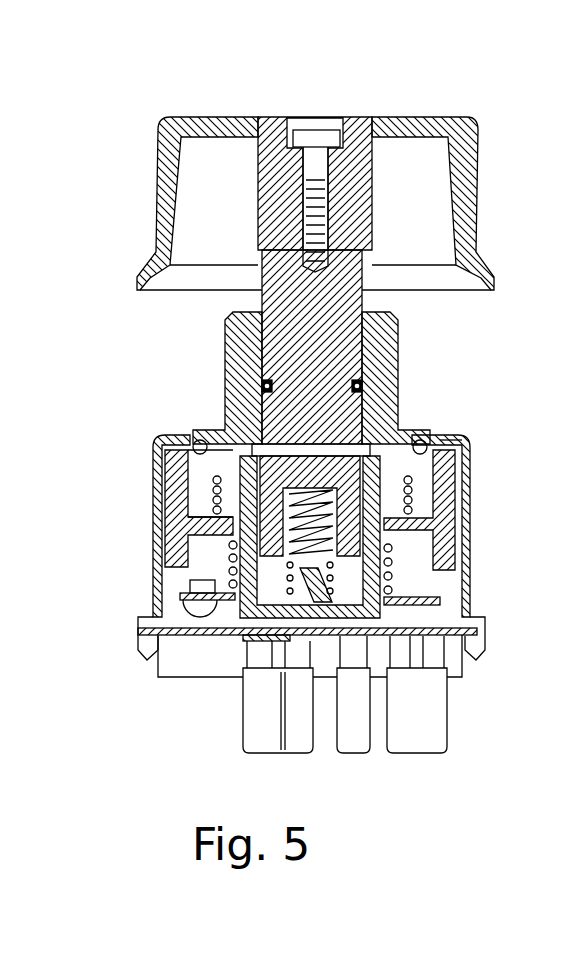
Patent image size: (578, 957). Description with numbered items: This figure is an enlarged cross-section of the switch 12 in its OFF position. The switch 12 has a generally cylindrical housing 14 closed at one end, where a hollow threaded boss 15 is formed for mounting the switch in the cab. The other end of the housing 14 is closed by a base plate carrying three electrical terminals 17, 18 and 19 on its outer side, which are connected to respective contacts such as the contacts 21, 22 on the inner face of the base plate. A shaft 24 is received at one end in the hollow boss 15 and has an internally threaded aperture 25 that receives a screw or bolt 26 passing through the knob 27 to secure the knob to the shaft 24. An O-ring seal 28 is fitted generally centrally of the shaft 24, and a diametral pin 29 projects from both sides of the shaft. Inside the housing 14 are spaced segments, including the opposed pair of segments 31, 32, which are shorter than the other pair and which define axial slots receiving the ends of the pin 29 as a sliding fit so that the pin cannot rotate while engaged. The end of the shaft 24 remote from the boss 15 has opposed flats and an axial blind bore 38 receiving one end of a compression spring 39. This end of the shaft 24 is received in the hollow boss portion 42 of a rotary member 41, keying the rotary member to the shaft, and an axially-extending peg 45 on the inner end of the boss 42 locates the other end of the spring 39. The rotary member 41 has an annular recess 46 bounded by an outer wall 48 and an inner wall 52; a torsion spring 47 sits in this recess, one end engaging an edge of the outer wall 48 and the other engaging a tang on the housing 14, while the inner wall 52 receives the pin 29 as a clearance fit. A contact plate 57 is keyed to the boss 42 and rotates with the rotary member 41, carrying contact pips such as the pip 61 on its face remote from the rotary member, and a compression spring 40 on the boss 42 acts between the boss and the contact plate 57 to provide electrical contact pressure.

The switch 12 is at (503, 300).
The housing 14 is at (471, 523).
The threaded boss 15 is at (400, 343).
The electrical terminal 17 is at (264, 745).
The electrical terminal 18 is at (358, 745).
The electrical terminal 19 is at (436, 745).
The contact 21 is at (212, 612).
The contact 22 is at (420, 655).
The shaft 24 is at (364, 264).
The internally threaded aperture 25 is at (330, 212).
The screw or bolt 26 is at (316, 135).
The knob 27 is at (395, 117).
The O-ring seal 28 is at (360, 387).
The diametral pin 29 is at (325, 448).
The segment 31 is at (430, 443).
The segment 32 is at (196, 446).
The axial blind bore 38 is at (388, 555).
The compression spring 39 is at (338, 570).
The compression spring 40 is at (230, 567).
The rotary member 41 is at (470, 450).
The hollow boss portion 42 is at (240, 640).
The axially-extending peg 45 is at (292, 594).
The annular recess 46 is at (219, 456).
The torsion spring 47 is at (210, 506).
The outer wall 48 is at (178, 463).
The inner wall 52 is at (213, 486).
The contact plate 57 is at (185, 598).
The pip 61 is at (152, 660).